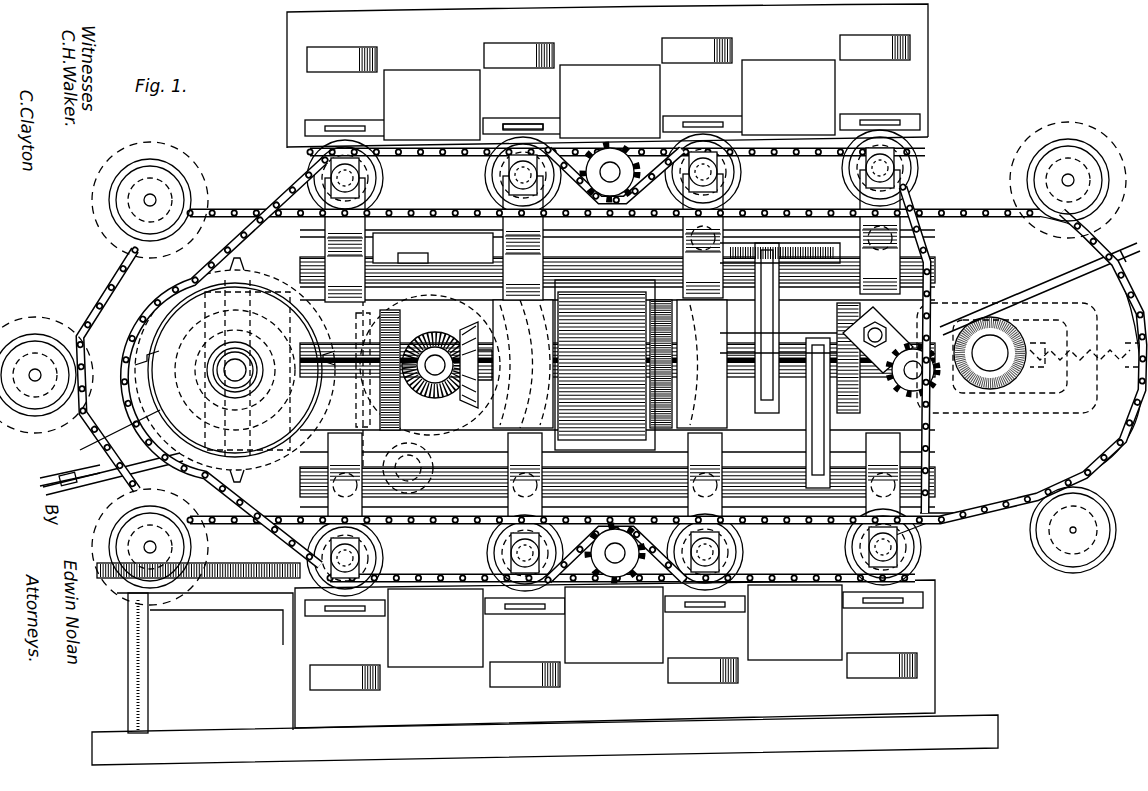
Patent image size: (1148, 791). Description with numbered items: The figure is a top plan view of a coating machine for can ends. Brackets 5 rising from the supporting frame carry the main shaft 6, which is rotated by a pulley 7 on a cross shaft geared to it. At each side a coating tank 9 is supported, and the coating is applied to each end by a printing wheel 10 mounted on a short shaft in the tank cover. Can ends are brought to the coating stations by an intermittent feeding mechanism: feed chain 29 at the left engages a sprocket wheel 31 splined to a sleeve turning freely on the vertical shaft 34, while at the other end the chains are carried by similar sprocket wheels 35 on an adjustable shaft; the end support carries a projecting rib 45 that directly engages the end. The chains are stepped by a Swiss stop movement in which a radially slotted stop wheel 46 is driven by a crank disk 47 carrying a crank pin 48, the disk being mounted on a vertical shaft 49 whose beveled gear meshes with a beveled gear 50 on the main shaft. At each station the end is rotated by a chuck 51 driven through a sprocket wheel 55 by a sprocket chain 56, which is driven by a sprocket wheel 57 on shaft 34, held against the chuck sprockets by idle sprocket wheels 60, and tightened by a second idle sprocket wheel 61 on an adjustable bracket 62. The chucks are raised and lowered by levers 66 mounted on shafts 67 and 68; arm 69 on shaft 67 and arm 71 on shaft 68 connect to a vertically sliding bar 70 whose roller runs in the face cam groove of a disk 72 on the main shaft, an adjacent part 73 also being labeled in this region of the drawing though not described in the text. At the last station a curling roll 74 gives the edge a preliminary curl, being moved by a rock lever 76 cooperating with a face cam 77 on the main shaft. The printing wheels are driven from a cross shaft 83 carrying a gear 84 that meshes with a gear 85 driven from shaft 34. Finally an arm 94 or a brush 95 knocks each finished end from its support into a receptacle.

The brackets 5 is at (610, 364).
The main shaft 6 is at (617, 347).
The pulley 7 is at (613, 365).
The coating tank 9 is at (523, 105).
The printing wheel 10 is at (348, 126).
The feed chain 29 is at (462, 220).
The sprocket wheel 31 is at (135, 375).
The vertical shaft 34 is at (228, 375).
The sprocket wheels 35 is at (1006, 378).
The projecting rib 45 is at (185, 190).
The stop wheel 46 is at (90, 318).
The crank disk 47 is at (404, 475).
The crank pin 48 is at (415, 475).
The vertical shaft 49 is at (452, 395).
The beveled gear 50 is at (438, 352).
The chuck 51 is at (666, 383).
The sprocket wheel 55 is at (385, 178).
The sprocket chain 56 is at (990, 372).
The driven sprocket wheel 57 is at (107, 432).
The idle sprocket wheel 60 is at (610, 142).
The second idle sprocket wheel 61 is at (903, 385).
The adjustable bracket 62 is at (878, 340).
The lever 66 is at (612, 346).
The shaft 67 is at (617, 468).
The shaft 68 is at (612, 262).
The arm 69 is at (808, 395).
The sliding bar 70 is at (790, 355).
The arm 71 is at (775, 270).
The cam disk 72 is at (755, 328).
The rod 73 is at (800, 310).
The curling roll 74 is at (614, 374).
The rock lever 76 is at (430, 365).
The face cam 77 is at (387, 365).
The cross shaft 83 is at (140, 700).
The gear 84 is at (110, 578).
The gear 85 is at (265, 600).
The arm 94 is at (75, 522).
The brush 95 is at (60, 477).